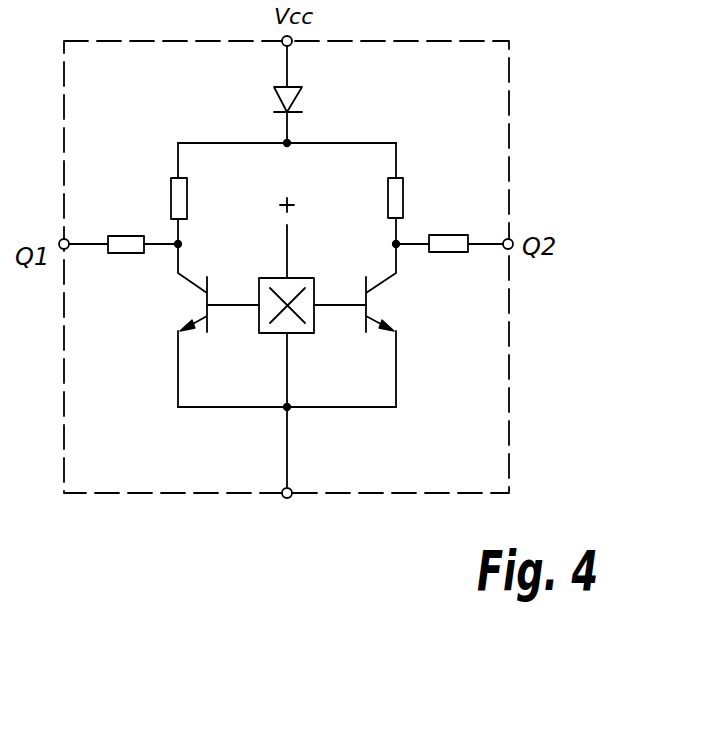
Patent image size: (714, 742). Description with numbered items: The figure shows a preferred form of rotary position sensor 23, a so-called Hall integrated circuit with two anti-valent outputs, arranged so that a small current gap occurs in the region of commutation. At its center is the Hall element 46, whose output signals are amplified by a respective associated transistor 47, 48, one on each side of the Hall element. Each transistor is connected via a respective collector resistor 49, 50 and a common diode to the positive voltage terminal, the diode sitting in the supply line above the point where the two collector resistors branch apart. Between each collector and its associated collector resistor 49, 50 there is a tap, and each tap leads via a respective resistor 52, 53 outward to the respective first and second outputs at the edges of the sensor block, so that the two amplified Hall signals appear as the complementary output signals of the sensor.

The rotary position sensor 23 is at (511, 82).
The Hall element 46 is at (313, 292).
The transistor 47 is at (207, 293).
The transistor 48 is at (362, 325).
The collector resistor 49 is at (175, 197).
The collector resistor 50 is at (403, 188).
The resistor 52 is at (135, 247).
The resistor 53 is at (457, 251).